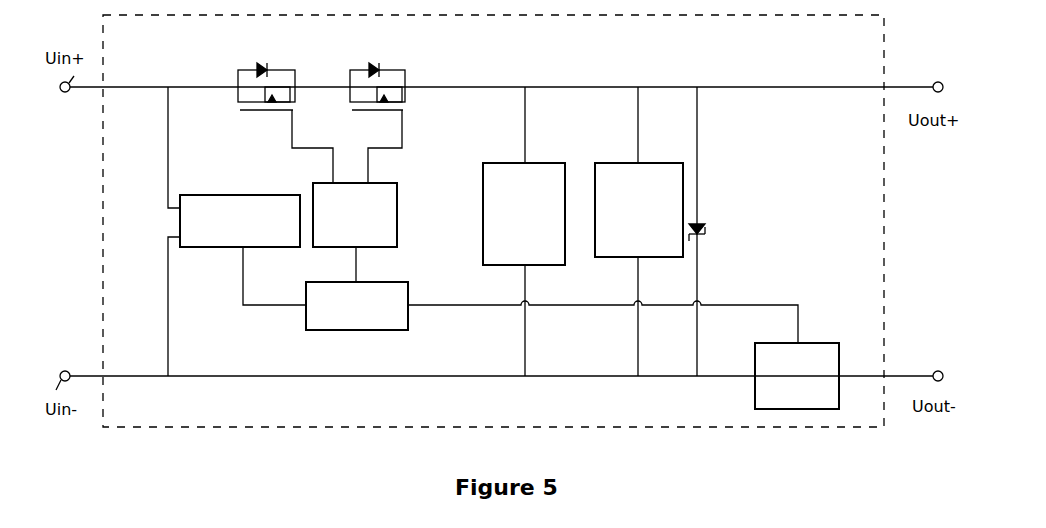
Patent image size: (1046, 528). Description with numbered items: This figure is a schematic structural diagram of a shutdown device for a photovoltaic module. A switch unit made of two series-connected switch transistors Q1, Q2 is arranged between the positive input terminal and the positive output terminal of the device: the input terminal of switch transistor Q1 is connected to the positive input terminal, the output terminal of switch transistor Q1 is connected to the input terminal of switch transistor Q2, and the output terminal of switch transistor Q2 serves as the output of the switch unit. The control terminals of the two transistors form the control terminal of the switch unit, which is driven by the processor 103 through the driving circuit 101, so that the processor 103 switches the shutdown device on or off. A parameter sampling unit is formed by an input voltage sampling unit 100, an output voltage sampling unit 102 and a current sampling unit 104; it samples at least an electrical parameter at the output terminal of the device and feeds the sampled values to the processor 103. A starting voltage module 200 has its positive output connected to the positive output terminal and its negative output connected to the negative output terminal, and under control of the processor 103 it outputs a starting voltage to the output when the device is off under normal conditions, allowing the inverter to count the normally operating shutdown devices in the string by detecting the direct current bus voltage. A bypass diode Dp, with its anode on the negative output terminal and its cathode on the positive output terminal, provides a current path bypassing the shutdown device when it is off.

The input voltage sampling unit 100 is at (210, 193).
The driving circuit 101 is at (400, 190).
The output voltage sampling unit 102 is at (642, 162).
The processor 103 is at (402, 278).
The current sampling unit 104 is at (822, 340).
The starting voltage module 200 is at (567, 163).
The switch transistor Q1 is at (285, 114).
The switch transistor Q2 is at (389, 114).
The bypass diode Dp is at (715, 231).